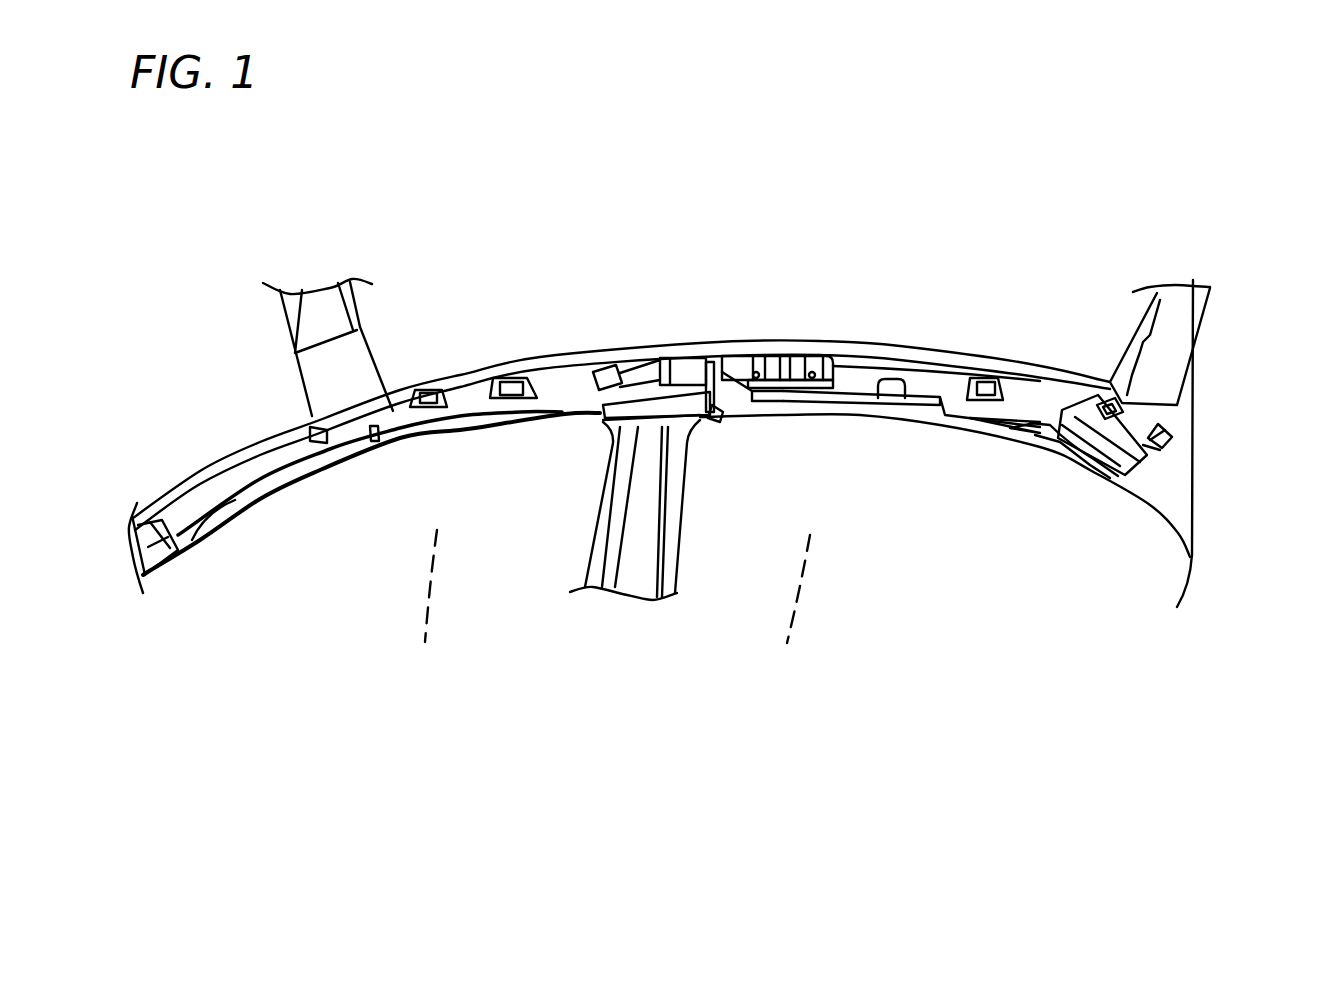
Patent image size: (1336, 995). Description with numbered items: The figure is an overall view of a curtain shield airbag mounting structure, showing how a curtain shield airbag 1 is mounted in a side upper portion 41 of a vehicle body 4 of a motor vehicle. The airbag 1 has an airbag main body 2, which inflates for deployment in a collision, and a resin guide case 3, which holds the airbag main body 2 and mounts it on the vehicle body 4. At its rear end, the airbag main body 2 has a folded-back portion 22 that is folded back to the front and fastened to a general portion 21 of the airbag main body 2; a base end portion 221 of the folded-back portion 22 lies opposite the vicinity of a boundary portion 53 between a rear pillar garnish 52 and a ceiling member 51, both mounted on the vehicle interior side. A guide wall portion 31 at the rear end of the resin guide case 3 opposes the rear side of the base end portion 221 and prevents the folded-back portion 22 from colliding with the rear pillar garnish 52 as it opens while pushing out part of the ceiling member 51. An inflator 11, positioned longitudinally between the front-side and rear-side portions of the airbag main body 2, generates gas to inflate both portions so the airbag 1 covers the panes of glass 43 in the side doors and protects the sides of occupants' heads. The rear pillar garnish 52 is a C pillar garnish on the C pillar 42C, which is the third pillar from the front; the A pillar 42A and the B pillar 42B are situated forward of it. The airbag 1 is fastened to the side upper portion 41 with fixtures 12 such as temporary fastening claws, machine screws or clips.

The curtain shield airbag 1 is at (856, 366).
The inflator 11 is at (797, 368).
The fixtures 12 is at (424, 391).
The airbag main body 2 is at (904, 407).
The general portion 21 is at (1018, 412).
The folded-back portion 22 is at (1130, 412).
The base end portion 221 is at (1142, 447).
The resin guide case 3 is at (1047, 463).
The guide wall portion 31 is at (1165, 425).
The vehicle body 4 is at (602, 336).
The side upper portion 41 is at (563, 425).
The A pillar 42A is at (222, 497).
The B pillar 42B is at (637, 567).
The C pillar 42C is at (1177, 487).
The panes of glass 43 is at (610, 604).
The ceiling member 51 is at (1043, 398).
The rear pillar garnish 52 is at (1168, 505).
The boundary portion 53 is at (1113, 467).